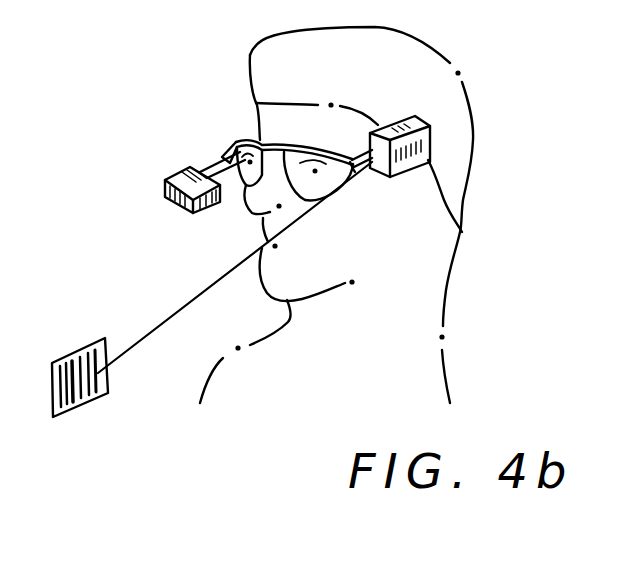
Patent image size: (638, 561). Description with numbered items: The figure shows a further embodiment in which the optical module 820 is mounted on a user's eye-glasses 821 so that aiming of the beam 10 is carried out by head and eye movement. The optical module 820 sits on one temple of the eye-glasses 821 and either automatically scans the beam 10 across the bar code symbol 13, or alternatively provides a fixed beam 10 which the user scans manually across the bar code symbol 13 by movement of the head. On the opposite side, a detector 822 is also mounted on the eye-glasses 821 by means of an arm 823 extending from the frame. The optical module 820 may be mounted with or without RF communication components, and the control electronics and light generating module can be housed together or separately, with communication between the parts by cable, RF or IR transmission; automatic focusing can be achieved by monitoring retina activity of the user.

The beam 10 is at (189, 300).
The bar code symbol 13 is at (83, 408).
The optical module 820 is at (433, 136).
The eye-glasses 821 is at (354, 168).
The detector 822 is at (165, 171).
The arm 823 is at (221, 157).